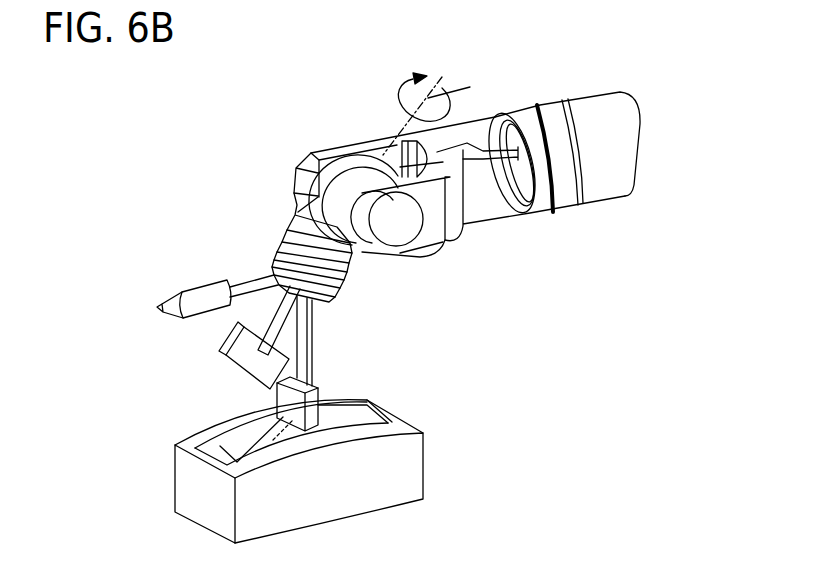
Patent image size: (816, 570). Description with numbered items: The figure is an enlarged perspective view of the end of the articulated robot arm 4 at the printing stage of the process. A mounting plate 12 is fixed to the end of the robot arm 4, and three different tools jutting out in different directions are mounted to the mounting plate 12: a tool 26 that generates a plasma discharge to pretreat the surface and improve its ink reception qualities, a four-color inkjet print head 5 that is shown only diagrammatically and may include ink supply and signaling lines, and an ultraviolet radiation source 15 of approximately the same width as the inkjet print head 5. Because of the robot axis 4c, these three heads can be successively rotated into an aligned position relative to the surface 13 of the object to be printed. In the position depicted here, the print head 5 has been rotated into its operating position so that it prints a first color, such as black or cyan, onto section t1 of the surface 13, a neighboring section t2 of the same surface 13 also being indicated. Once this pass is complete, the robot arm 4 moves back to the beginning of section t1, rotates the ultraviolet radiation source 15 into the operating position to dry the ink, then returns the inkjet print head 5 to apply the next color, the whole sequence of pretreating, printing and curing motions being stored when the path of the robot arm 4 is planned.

The robot arm 4 is at (597, 177).
The robot axis 4c is at (402, 95).
The mounting plate 12 is at (329, 303).
The tool 26 is at (200, 293).
The ultraviolet radiation source 15 is at (247, 373).
The inkjet print head 5 is at (314, 414).
The surface 13 is at (400, 421).
The section t1 is at (231, 444).
The second position t2 is at (360, 414).